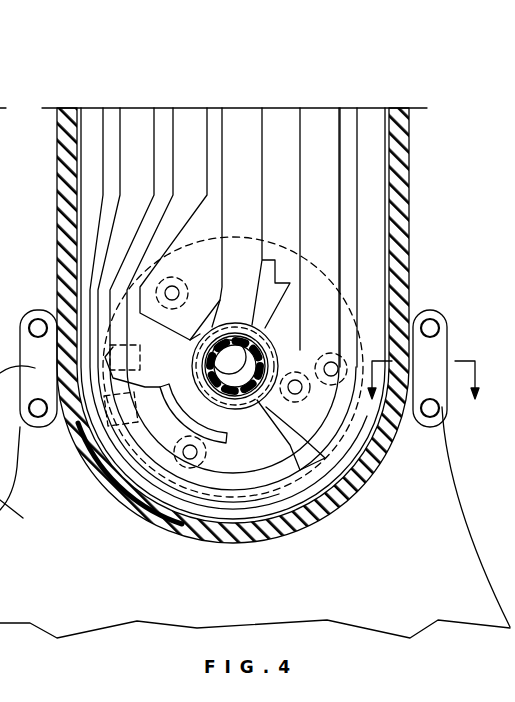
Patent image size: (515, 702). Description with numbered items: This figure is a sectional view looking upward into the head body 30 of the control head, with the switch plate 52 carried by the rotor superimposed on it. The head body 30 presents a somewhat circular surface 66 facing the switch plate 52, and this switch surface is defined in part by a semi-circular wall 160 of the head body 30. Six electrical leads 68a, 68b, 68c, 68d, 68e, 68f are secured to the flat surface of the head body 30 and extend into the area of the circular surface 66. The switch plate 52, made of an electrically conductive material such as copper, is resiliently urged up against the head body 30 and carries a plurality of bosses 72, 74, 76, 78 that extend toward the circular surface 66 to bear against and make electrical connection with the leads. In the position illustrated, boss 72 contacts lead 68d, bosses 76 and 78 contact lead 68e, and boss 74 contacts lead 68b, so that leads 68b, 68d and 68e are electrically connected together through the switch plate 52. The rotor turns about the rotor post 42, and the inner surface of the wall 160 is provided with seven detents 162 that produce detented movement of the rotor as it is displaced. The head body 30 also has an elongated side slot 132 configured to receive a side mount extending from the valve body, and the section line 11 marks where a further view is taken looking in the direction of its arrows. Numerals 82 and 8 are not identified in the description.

The head body 30 is at (57, 145).
The housing portion 82 is at (11, 180).
The partial numeral 8 is at (5, 244).
The electrical lead 68a is at (88, 117).
The electrical lead 68b is at (133, 120).
The electrical lead 68c is at (188, 120).
The electrical lead 68d is at (240, 120).
The electrical lead 68e is at (320, 125).
The electrical lead 68f is at (370, 123).
The boss 72 is at (168, 297).
The rotor post 42 is at (238, 347).
The switch plate 52 is at (340, 290).
The circular surface 66 is at (320, 333).
The section line 11— 11 is at (422, 390).
The side slot 132 is at (447, 412).
The boss 78 is at (338, 382).
The boss 76 is at (298, 400).
The semi-circular wall 160 is at (256, 536).
The boss 74 is at (183, 466).
The detents 162 is at (117, 500).